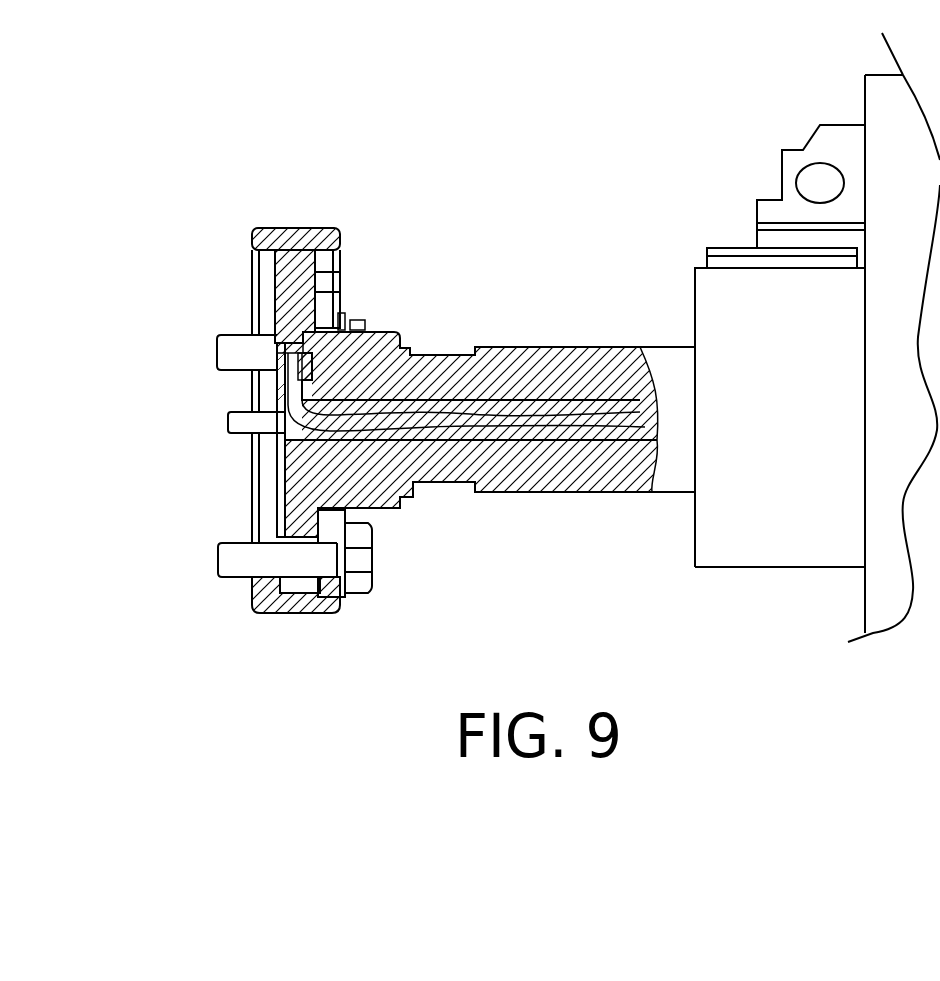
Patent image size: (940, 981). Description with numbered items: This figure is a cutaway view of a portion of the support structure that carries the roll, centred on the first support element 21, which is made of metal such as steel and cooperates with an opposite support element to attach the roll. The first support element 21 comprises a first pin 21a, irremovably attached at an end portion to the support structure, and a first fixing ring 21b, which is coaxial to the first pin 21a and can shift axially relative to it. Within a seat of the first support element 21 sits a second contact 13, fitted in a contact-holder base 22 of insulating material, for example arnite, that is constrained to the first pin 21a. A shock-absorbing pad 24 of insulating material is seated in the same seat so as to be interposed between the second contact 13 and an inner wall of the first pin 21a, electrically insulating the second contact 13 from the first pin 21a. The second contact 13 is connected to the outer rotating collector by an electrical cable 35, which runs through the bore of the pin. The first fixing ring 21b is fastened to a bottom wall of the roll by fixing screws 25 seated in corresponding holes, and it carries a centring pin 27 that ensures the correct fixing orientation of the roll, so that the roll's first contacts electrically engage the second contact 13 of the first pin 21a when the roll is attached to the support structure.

The first support element 21 is at (287, 207).
The first pin 21a is at (283, 494).
The first fixing ring 21b is at (352, 255).
The contact-holder base 22 is at (280, 343).
The pad 24 is at (370, 323).
The second contact 13 is at (280, 376).
The centring pin 27 is at (227, 422).
The fixing screw 25 is at (233, 563).
The electrical cable 35 is at (473, 420).